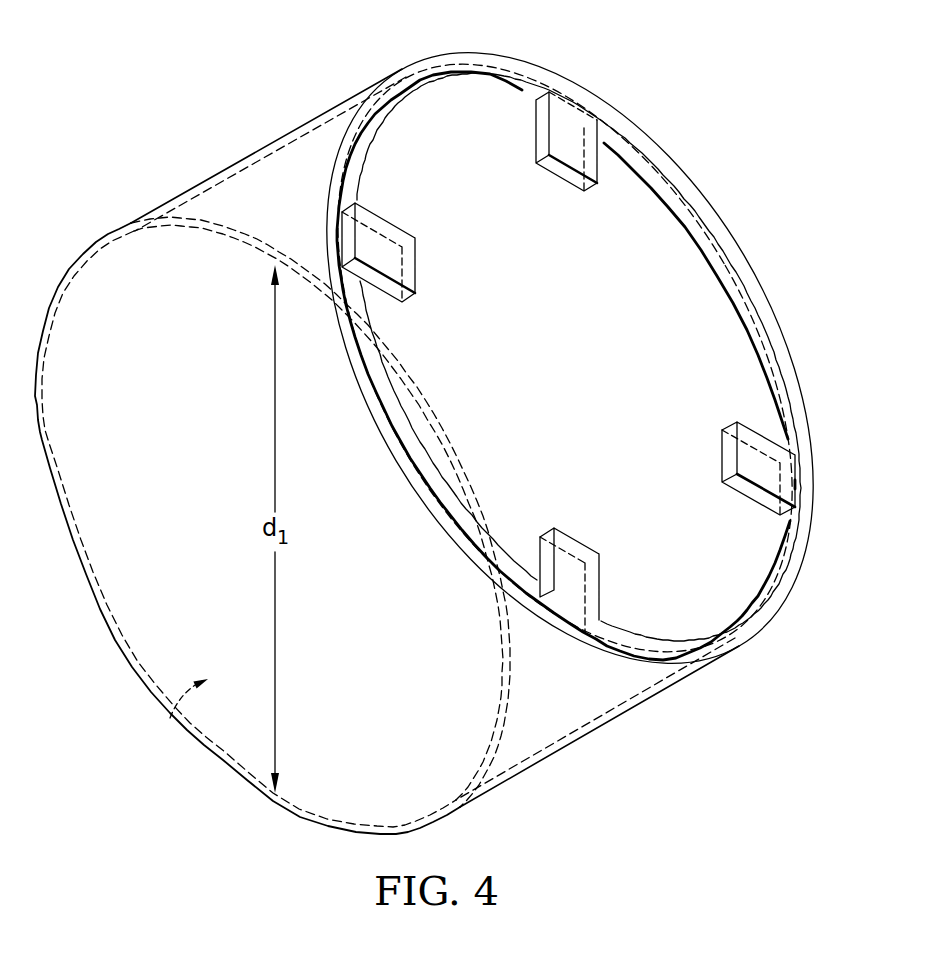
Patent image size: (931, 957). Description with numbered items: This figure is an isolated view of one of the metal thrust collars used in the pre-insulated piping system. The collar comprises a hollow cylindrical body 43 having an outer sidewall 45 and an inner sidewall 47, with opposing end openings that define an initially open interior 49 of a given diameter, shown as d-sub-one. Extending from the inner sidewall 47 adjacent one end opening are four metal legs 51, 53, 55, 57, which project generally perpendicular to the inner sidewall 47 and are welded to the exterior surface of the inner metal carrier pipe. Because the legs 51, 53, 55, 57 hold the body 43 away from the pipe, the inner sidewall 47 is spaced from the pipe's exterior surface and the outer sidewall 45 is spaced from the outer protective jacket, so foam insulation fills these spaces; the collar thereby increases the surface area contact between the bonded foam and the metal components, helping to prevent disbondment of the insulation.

The hollow cylindrical body 43 is at (735, 243).
The outer sidewall 45 is at (623, 712).
The inner sidewall 47 is at (718, 294).
The open interior 49 is at (170, 718).
The metal leg 51 is at (417, 263).
The metal leg 53 is at (558, 183).
The metal leg 55 is at (720, 456).
The metal leg 57 is at (578, 538).